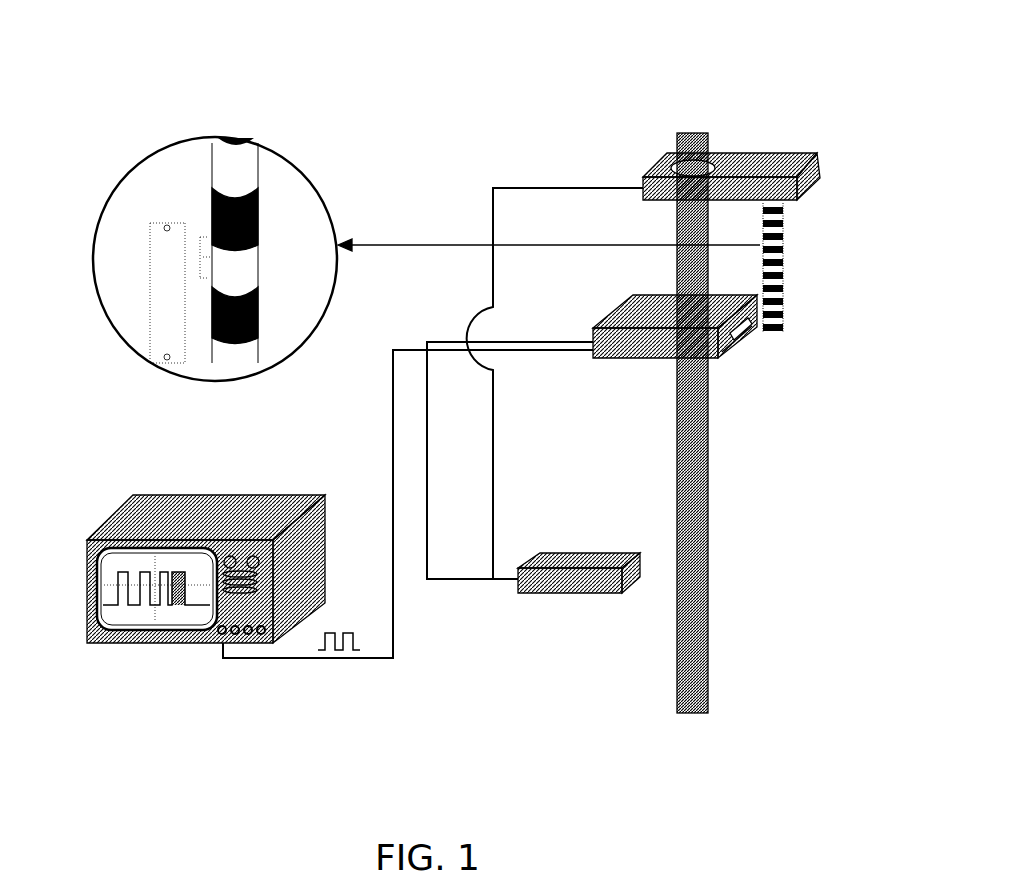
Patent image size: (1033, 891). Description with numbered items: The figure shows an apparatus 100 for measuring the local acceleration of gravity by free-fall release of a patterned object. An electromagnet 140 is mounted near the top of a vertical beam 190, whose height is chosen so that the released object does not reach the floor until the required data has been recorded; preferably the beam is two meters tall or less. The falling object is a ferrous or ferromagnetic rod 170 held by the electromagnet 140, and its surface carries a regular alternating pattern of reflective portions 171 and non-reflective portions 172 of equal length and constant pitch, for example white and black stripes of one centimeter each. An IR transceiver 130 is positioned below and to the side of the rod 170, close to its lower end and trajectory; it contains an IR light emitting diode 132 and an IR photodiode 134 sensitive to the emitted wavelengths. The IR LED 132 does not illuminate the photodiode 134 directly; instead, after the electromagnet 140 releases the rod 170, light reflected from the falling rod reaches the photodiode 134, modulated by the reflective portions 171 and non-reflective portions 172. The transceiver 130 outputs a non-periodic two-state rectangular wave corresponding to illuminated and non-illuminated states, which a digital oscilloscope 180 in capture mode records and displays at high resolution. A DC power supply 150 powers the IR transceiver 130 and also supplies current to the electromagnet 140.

The apparatus 100 is at (168, 57).
The IR transceiver 130 is at (676, 354).
The IR light emitting diode 132 is at (733, 342).
The IR photodiode 134 is at (747, 329).
The electromagnet 140 is at (800, 153).
The DC power supply 150 is at (518, 591).
The rod 170 is at (783, 251).
The reflective portions 171 is at (260, 264).
The non-reflective portions 172 is at (260, 312).
The digital oscilloscope 180 is at (110, 526).
The vertical beam 190 is at (686, 133).